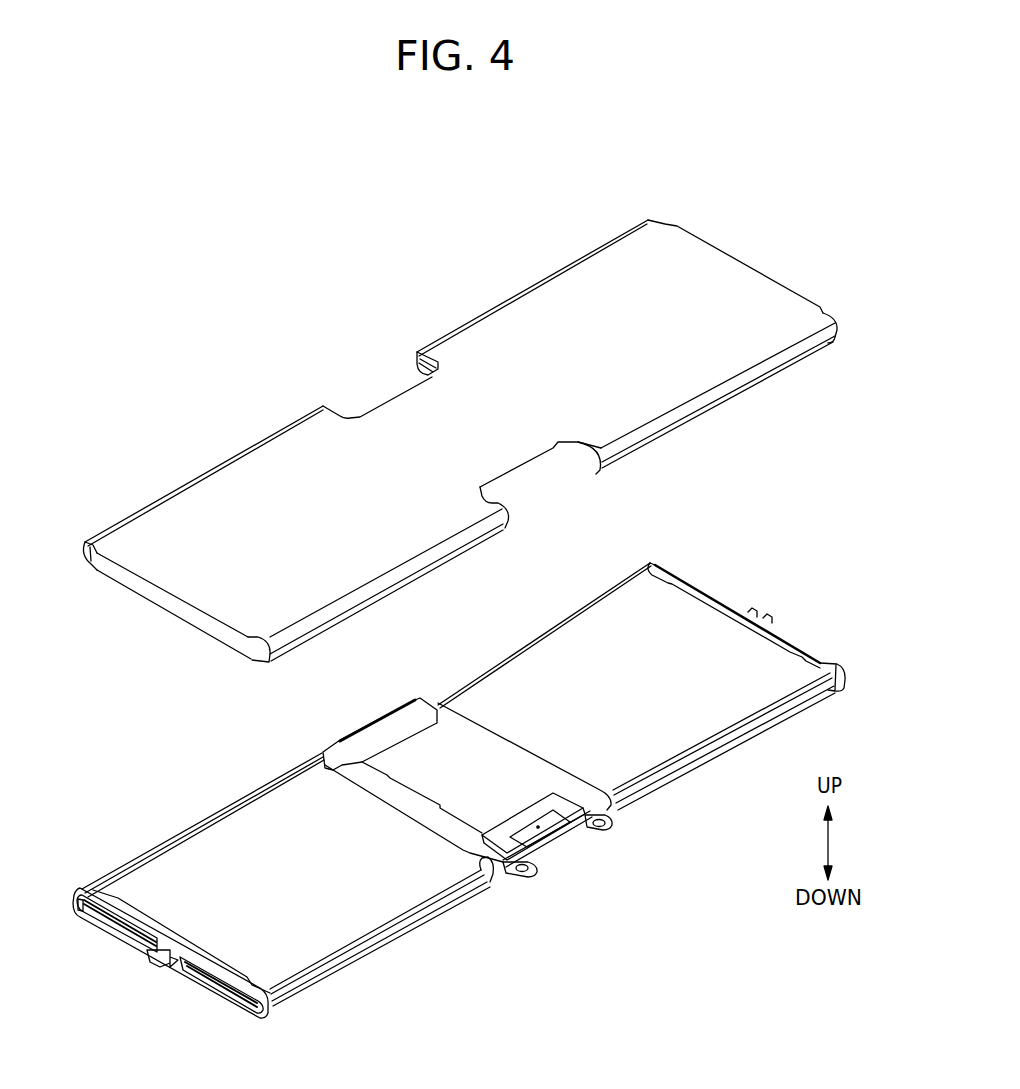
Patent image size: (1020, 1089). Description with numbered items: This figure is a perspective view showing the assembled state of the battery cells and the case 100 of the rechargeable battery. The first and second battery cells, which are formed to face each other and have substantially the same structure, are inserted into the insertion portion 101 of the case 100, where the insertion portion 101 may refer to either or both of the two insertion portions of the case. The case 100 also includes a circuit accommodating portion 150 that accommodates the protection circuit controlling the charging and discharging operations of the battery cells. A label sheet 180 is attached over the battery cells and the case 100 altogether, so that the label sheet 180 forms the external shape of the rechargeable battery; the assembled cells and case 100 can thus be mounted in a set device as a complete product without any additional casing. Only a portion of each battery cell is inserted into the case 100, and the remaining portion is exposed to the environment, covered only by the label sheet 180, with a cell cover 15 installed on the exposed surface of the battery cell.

The label sheet 180 is at (708, 260).
The case 100 is at (459, 796).
The insertion portion 101 is at (470, 845).
The circuit accommodating portion 150 is at (558, 842).
The cell cover 15 is at (720, 607).